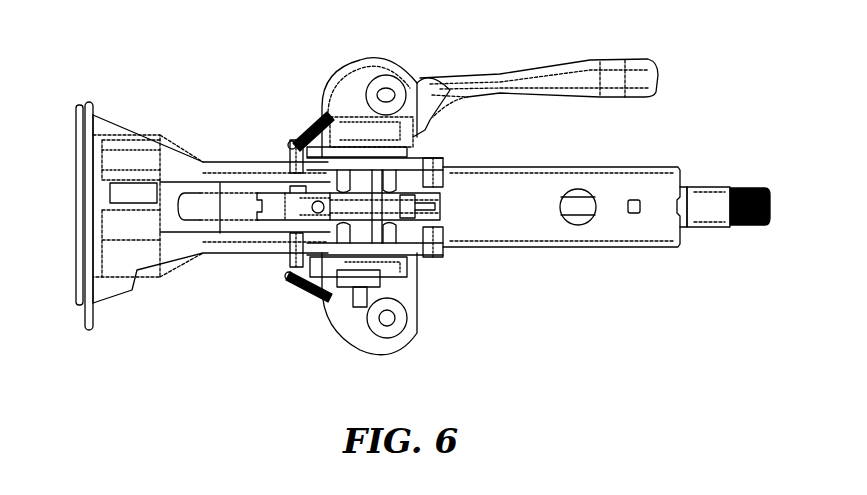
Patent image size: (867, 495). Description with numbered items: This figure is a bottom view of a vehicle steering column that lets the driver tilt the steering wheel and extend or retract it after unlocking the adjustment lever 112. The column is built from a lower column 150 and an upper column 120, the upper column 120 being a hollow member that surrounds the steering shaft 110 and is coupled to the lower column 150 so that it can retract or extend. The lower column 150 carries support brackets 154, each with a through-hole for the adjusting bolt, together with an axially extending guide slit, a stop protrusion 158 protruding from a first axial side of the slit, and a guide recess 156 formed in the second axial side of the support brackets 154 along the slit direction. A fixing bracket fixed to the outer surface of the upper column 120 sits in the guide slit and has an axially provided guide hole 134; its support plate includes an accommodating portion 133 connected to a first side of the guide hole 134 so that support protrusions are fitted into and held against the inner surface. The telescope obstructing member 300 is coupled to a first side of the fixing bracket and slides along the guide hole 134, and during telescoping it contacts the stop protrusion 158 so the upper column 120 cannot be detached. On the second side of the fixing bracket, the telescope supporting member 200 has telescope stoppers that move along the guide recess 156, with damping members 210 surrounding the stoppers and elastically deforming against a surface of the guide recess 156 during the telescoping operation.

The steering shaft 110 is at (707, 220).
The adjustment lever 112 is at (630, 73).
The upper column 120 is at (550, 240).
The accommodating portion 133 is at (443, 120).
The guide hole 134 is at (413, 110).
The lower column 150 is at (223, 168).
The support brackets 154 is at (323, 110).
The guide recess 156 is at (233, 227).
The stop protrusion 158 is at (460, 164).
The telescope supporting member 200 is at (275, 175).
The damping members 210 is at (275, 232).
The telescope obstructing member 300 is at (417, 208).